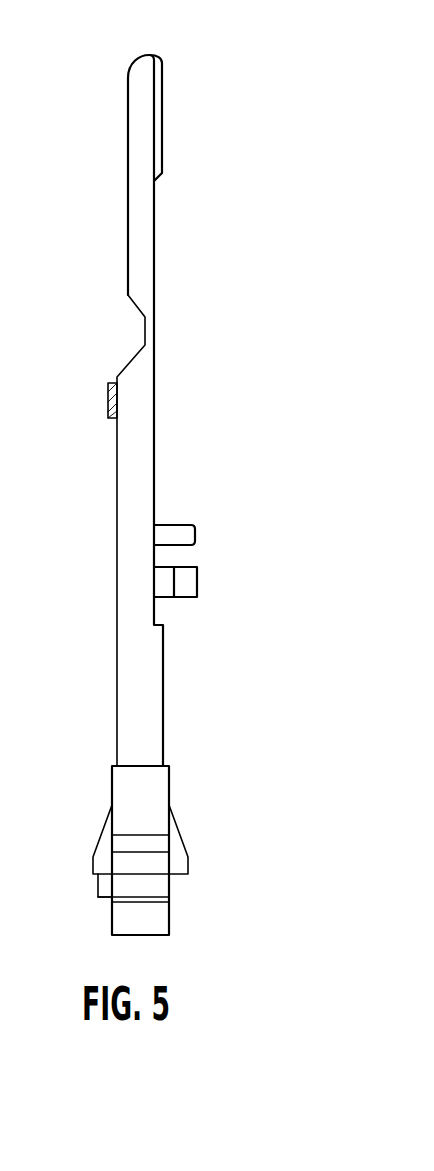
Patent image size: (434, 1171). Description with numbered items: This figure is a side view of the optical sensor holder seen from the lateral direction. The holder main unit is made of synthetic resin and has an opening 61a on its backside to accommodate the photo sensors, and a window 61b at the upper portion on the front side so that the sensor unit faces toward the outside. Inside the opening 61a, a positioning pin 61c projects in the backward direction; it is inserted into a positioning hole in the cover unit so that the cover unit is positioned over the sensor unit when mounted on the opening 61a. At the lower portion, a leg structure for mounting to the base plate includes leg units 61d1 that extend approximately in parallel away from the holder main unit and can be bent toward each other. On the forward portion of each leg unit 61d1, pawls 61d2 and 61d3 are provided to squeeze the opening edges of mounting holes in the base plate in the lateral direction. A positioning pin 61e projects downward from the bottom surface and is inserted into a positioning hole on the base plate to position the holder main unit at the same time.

The opening 61a is at (155, 421).
The window 61b is at (110, 400).
The positioning pin 61c is at (183, 525).
The leg unit 61d1 is at (170, 780).
The pawl 61d2 is at (170, 850).
The pawl 61d3 is at (170, 917).
The positioning pin 61e is at (98, 883).